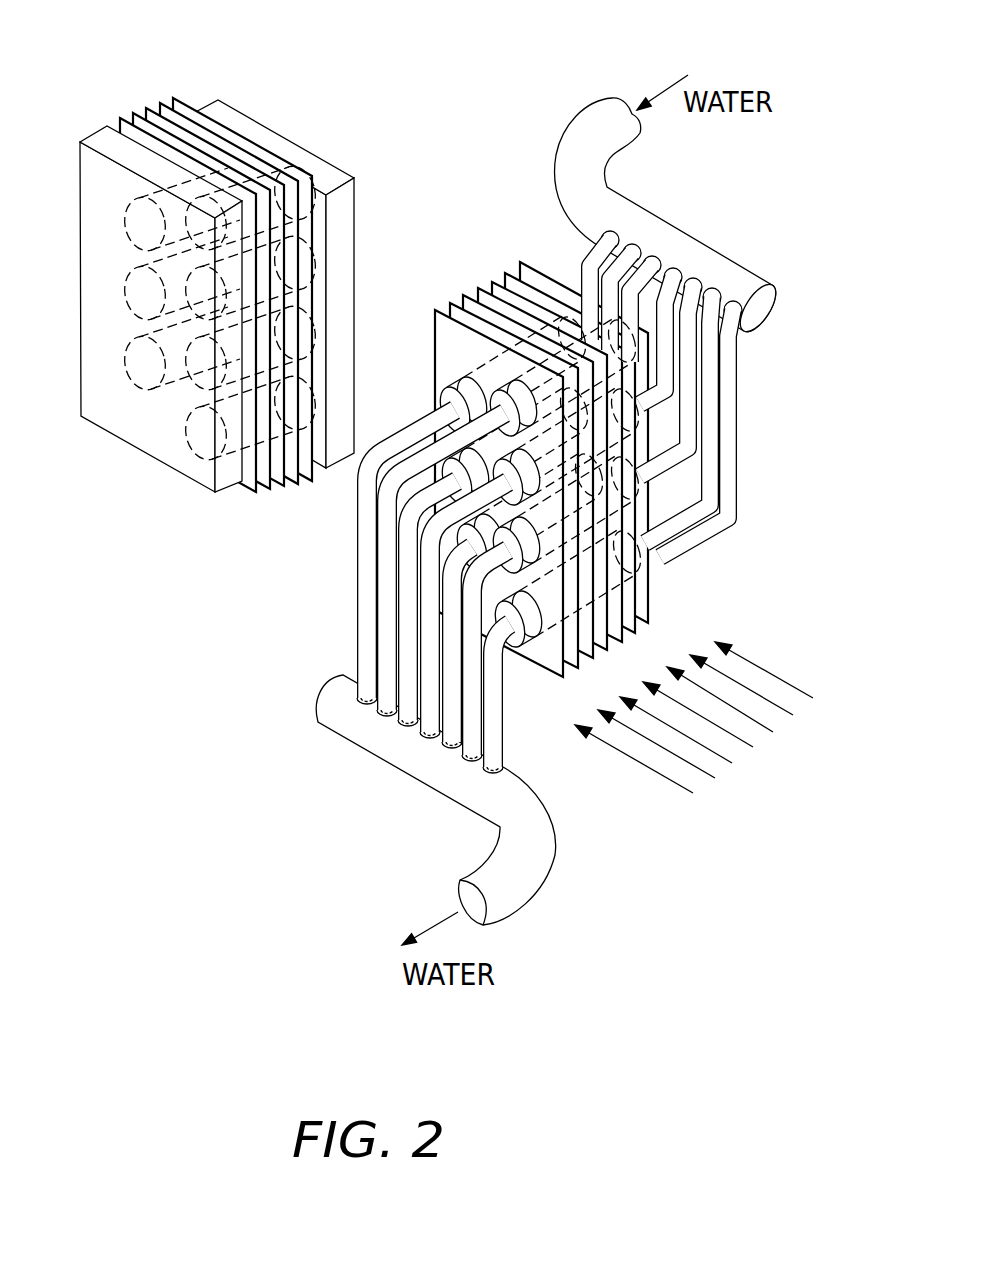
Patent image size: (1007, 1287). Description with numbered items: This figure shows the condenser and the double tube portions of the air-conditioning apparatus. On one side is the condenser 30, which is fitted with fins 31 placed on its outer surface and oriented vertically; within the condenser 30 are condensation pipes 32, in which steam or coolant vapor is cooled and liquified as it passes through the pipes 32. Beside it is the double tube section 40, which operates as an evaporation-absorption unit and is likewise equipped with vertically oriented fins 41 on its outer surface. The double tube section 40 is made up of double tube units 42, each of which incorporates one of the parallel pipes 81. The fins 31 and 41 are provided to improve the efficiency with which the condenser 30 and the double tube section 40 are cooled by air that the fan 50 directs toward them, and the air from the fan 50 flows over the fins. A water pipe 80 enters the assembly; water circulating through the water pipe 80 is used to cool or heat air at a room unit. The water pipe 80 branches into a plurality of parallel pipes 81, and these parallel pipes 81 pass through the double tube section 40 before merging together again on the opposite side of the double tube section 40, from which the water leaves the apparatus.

The condenser 30 is at (212, 284).
The fins 31 is at (135, 119).
The condensation pipes 32 is at (224, 465).
The double tube section 40 is at (564, 511).
The fins 41 is at (500, 285).
The double tube units 42 is at (541, 664).
The fan 50 is at (741, 731).
The water pipe 80 is at (618, 153).
The parallel pipes 81 is at (721, 416).